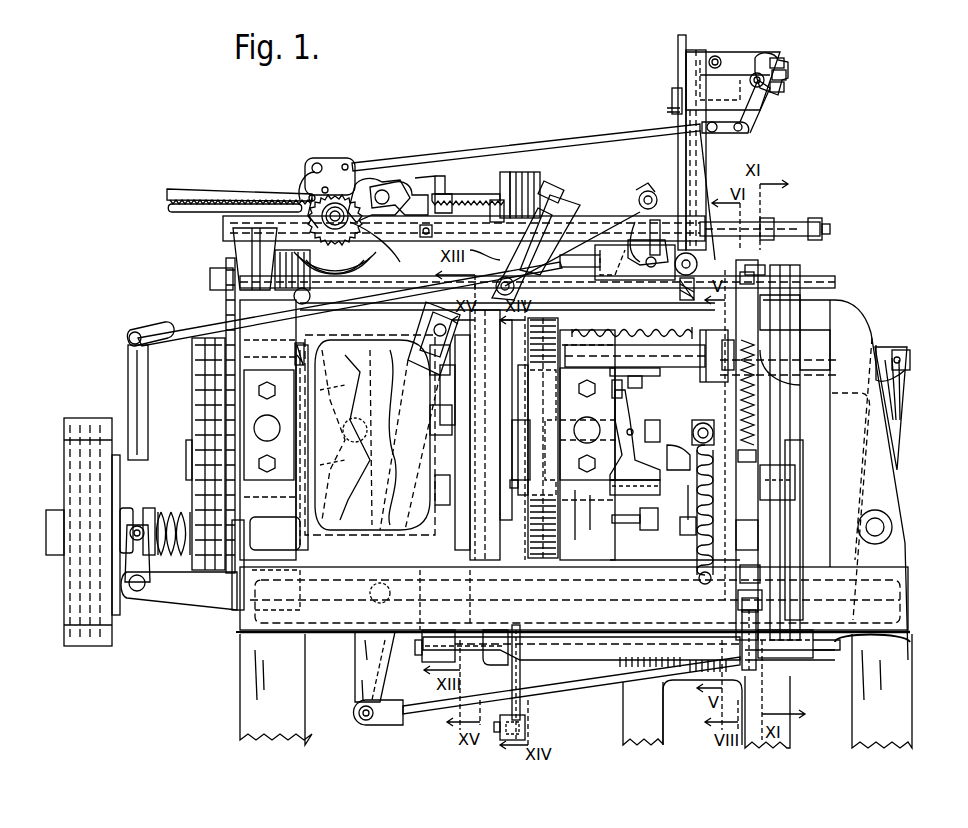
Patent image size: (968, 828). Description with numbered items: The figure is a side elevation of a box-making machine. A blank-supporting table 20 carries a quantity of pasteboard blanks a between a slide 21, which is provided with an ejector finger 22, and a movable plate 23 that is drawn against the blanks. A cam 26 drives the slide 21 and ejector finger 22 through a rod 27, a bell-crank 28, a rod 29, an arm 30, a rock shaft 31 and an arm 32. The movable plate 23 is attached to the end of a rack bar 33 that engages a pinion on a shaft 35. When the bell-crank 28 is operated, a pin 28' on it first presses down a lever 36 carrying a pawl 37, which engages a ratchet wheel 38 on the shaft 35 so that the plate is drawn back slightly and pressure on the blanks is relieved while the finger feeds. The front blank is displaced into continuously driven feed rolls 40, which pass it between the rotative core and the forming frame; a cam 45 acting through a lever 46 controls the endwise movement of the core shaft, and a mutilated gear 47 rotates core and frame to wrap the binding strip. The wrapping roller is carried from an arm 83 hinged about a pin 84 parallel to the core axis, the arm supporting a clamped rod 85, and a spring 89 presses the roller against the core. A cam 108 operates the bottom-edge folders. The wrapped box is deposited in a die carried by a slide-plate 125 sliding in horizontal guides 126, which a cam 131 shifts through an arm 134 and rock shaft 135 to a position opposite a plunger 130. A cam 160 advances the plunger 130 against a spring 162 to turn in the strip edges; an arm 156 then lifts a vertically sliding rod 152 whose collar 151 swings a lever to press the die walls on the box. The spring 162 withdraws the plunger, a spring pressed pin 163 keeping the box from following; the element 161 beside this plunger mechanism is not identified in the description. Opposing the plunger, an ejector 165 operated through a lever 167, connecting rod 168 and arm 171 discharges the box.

The blank-supporting table 20 is at (552, 240).
The slide 21 is at (676, 124).
The ejector finger 22 is at (684, 170).
The movable plate 23 is at (510, 180).
The pasteboard blanks a is at (548, 210).
The cam 26 is at (302, 487).
The rod 27 is at (300, 326).
The bell-crank 28 is at (315, 174).
The pin 28' is at (328, 181).
The rod 29 is at (550, 148).
The arm 30 is at (755, 100).
The rock shaft 31 is at (775, 70).
The arm 32 is at (735, 50).
The rack bar 33 is at (192, 192).
The shaft 35 is at (400, 210).
The lever 36 is at (358, 188).
The pawl 37 is at (315, 206).
The ratchet wheel 38 is at (362, 250).
The feed rolls 40 is at (680, 278).
The cam 45 is at (385, 345).
The lever 46 is at (430, 310).
The mutilated gear 47 is at (556, 530).
The arm 83 is at (700, 425).
The pin 84 is at (663, 455).
The rod 85 is at (700, 428).
The spring 89 is at (698, 535).
The cam 108 is at (462, 617).
The slide-plate 125 is at (777, 400).
The horizontal guides 126 is at (795, 440).
The plunger 130 is at (740, 345).
The cam 131 is at (515, 555).
The arm 134 is at (520, 712).
The rock shaft 135 is at (584, 658).
The collar 151 is at (740, 280).
The vertically sliding rod 152 is at (752, 551).
The arm 156 is at (742, 618).
The cam 160 is at (645, 500).
The rod 161 is at (702, 358).
The spring 162 is at (655, 330).
The spring pressed pin 163 is at (736, 398).
The ejector 165 is at (912, 360).
The lever 167 is at (360, 660).
The connecting rod 168 is at (430, 712).
The arm 171 is at (898, 416).